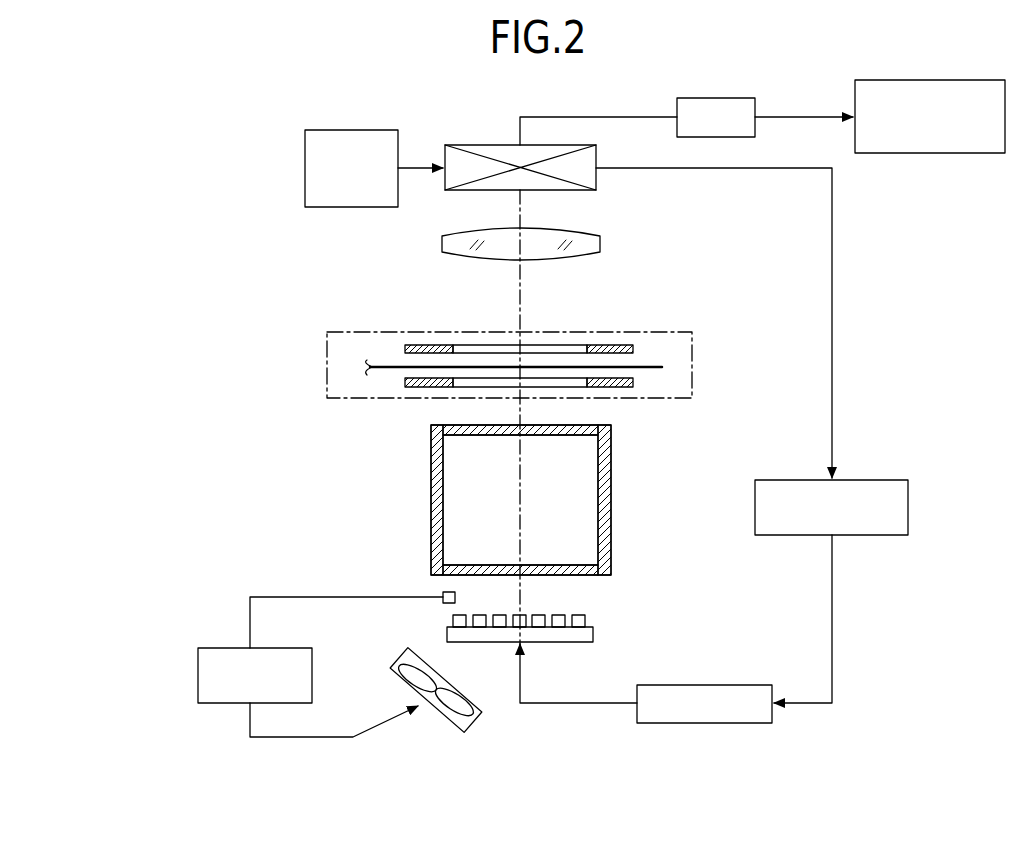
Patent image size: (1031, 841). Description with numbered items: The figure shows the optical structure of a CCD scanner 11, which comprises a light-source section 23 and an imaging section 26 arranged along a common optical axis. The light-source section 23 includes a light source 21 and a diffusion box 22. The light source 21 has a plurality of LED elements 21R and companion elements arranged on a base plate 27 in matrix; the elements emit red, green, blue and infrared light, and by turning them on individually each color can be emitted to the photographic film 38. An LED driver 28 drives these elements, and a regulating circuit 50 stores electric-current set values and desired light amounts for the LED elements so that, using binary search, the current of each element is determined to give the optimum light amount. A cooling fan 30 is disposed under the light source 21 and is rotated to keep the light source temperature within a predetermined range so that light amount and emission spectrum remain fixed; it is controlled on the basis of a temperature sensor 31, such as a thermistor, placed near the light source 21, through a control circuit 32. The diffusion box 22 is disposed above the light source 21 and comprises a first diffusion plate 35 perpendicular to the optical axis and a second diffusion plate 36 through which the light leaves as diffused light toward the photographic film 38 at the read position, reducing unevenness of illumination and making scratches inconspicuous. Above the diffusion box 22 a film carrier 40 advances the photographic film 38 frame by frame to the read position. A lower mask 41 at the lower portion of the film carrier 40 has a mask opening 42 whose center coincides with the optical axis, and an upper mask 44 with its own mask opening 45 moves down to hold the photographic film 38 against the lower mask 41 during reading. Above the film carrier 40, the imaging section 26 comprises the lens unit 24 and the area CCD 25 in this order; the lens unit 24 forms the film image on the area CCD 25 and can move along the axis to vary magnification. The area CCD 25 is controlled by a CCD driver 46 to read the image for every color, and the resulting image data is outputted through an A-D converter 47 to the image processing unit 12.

The CCD scanner 11 is at (256, 273).
The image processing unit 12 is at (893, 153).
The light source 21 is at (627, 625).
The LED element 21R is at (585, 619).
The diffusion box 22 is at (605, 537).
The light-source section 23 is at (683, 502).
The lens unit 24 is at (445, 240).
The area CCD 25 is at (480, 145).
The imaging section 26 is at (630, 234).
The base plate 27 is at (558, 643).
The LED driver 28 is at (772, 717).
The cooling fan 30 is at (398, 655).
The temperature sensor 31 is at (443, 592).
The control circuit 32 is at (230, 648).
The first diffusion plate 35 is at (580, 565).
The second diffusion plate 36 is at (556, 492).
The photographic film 38 is at (378, 362).
The film carrier 40 is at (327, 370).
The lower mask 41 is at (410, 388).
The mask opening 42 is at (458, 388).
The upper mask 44 is at (432, 345).
The mask opening 45 is at (482, 345).
The CCD driver 46 is at (325, 207).
The A-D converter 47 is at (740, 98).
The regulating circuit 50 is at (862, 480).